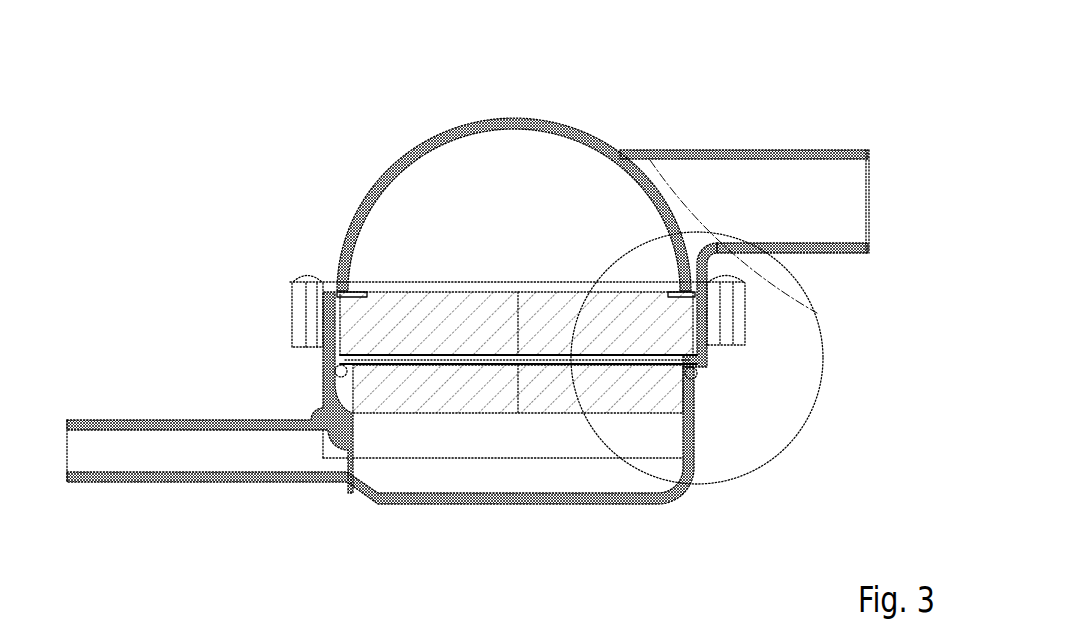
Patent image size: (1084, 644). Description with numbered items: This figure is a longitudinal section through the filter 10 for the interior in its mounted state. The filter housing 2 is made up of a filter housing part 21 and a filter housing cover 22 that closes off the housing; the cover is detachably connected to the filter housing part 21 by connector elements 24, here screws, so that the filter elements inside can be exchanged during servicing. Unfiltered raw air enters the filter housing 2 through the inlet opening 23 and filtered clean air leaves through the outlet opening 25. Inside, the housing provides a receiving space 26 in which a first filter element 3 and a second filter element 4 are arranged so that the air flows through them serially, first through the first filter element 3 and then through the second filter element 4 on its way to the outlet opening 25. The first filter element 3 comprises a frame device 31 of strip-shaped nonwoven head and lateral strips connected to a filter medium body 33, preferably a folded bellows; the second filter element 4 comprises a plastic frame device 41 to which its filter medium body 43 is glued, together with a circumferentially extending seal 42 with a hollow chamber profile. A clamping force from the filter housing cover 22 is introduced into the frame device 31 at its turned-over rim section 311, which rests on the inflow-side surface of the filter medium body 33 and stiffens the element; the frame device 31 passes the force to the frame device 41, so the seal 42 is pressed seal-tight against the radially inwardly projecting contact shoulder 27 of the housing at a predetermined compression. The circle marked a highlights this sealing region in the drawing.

The filter 10 is at (336, 134).
The filter housing 2 is at (400, 140).
The filter housing cover 22 is at (600, 137).
The inlet opening 23 is at (826, 150).
The connector elements 24 is at (310, 278).
The filter housing part 21 is at (604, 504).
The outlet opening 25 is at (138, 483).
The receiving space 26 is at (518, 446).
The contact shoulder 27 is at (697, 390).
The first filter element 3 is at (348, 306).
The filter medium body 33 is at (468, 338).
The frame device 31 is at (698, 320).
The rim section 311 is at (670, 293).
The second filter element 4 is at (348, 386).
The frame device 41 is at (693, 355).
The seal 42 is at (698, 372).
The filter medium body 43 is at (535, 402).
The detail circle a is at (823, 374).